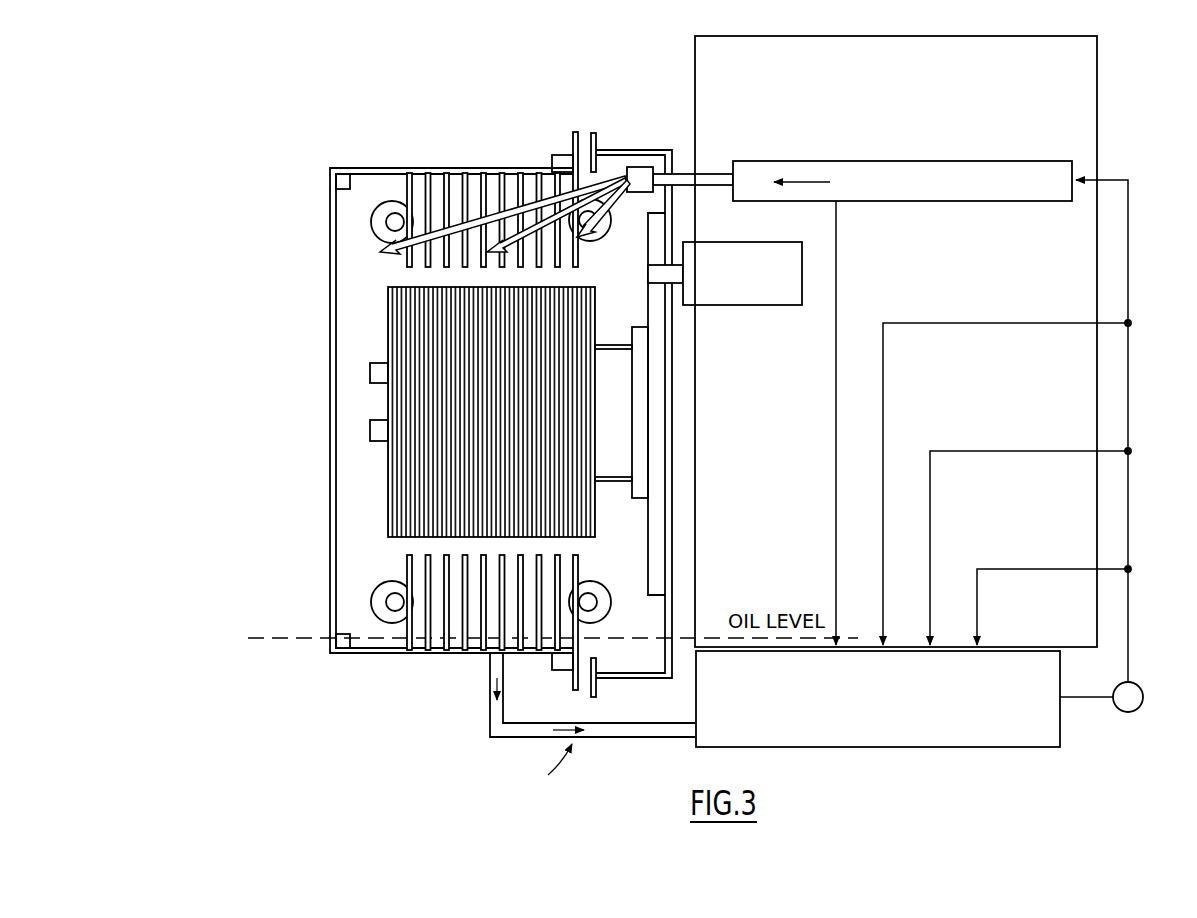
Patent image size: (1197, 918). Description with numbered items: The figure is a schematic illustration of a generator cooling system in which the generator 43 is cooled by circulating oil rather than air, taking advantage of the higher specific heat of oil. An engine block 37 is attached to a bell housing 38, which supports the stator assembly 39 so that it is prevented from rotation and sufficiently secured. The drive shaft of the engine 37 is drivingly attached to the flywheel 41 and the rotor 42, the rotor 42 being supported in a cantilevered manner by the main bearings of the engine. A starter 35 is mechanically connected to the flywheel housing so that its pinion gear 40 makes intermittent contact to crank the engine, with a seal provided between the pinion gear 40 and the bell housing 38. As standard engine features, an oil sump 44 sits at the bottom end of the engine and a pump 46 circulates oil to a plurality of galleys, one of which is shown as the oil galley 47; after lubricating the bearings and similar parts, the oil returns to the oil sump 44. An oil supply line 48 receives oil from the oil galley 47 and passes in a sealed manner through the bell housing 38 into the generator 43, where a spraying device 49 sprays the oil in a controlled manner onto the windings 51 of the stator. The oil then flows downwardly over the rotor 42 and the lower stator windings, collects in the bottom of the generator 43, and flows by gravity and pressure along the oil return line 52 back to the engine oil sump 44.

The starter 35 is at (742, 252).
The engine block 37 is at (748, 52).
The bell housing 38 is at (682, 156).
The stator assembly 39 is at (462, 172).
The pinion gear 40 is at (676, 275).
The flywheel 41 is at (660, 590).
The rotor 42 is at (415, 505).
The generator 43 is at (330, 243).
The oil sump 44 is at (908, 730).
The pump 46 is at (1142, 705).
The oil galley 47 is at (1012, 175).
The oil supply line 48 is at (706, 180).
The spraying device 49 is at (640, 195).
The windings 51 is at (418, 262).
The oil return line 52 is at (607, 735).